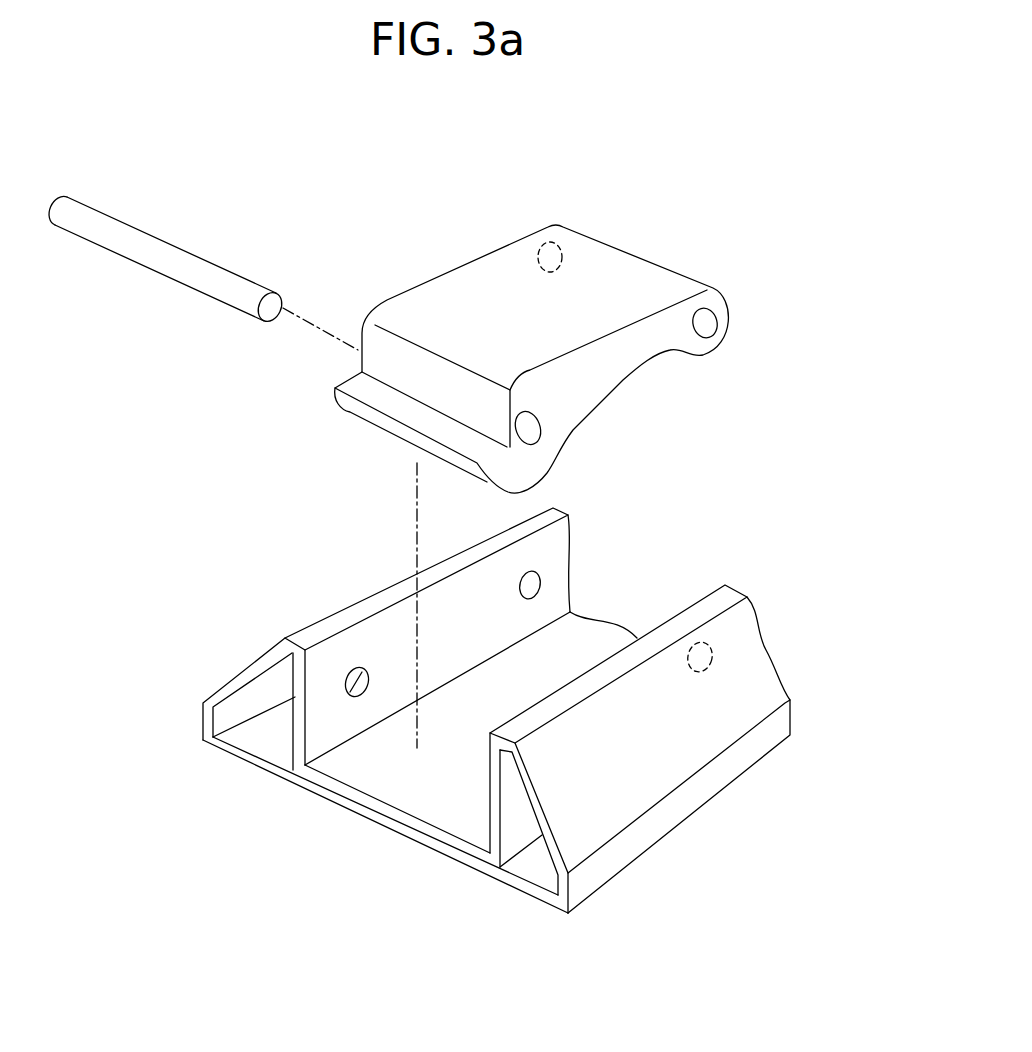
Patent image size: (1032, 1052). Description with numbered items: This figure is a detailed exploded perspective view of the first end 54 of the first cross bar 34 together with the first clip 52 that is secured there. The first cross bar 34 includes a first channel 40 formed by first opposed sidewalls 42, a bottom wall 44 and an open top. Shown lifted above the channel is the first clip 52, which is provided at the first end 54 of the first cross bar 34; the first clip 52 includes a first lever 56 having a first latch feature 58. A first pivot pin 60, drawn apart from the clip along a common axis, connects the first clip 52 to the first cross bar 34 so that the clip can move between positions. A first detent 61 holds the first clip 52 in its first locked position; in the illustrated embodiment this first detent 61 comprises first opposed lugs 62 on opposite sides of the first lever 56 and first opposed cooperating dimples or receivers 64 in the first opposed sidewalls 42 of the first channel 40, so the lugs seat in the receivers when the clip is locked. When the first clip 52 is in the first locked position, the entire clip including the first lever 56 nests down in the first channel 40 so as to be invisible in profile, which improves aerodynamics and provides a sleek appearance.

The first cross bar 34 is at (665, 778).
The first channel 40 is at (517, 713).
The first opposed sidewalls 42 is at (385, 650).
The bottom wall 44 is at (425, 787).
The first clip 52 is at (550, 330).
The first end 54 is at (325, 630).
The first lever 56 is at (445, 278).
The first latch feature 58 is at (408, 412).
The first pivot pin 60 is at (160, 263).
The first detent 61 is at (770, 428).
The first opposed lugs 62 is at (537, 246).
The first opposed cooperating dimples or receivers 64 is at (540, 585).